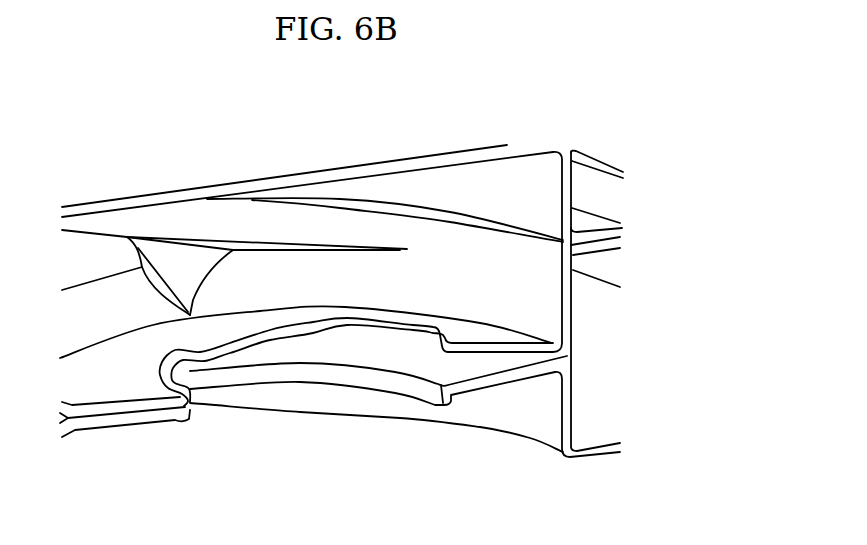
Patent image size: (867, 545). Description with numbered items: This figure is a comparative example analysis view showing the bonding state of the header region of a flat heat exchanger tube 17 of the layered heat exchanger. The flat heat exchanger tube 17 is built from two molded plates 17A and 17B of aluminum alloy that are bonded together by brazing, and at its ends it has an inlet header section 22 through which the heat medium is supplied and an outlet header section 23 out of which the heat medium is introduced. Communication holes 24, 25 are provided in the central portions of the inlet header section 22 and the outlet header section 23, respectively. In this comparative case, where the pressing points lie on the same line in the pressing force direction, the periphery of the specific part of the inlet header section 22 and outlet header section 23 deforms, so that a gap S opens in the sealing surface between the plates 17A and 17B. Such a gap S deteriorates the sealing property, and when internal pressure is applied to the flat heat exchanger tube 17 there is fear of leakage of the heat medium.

The flat heat exchanger tube 17 is at (117, 428).
The molded plate 17A is at (572, 190).
The molded plate 17B is at (573, 313).
The inlet header section 22 is at (311, 221).
The outlet header section 23 is at (285, 173).
The communication hole 24 is at (356, 397).
The communication hole 25 is at (313, 372).
The gap S is at (407, 352).